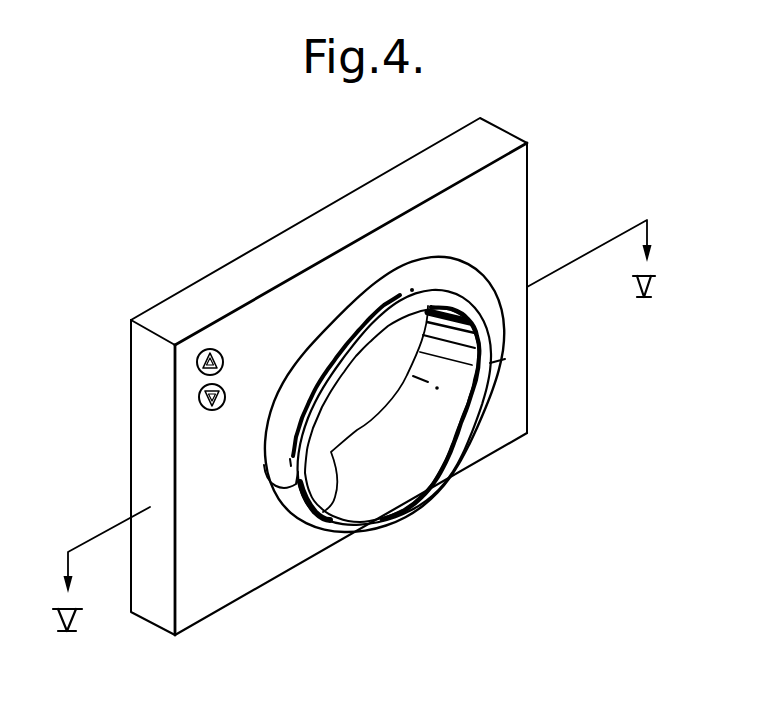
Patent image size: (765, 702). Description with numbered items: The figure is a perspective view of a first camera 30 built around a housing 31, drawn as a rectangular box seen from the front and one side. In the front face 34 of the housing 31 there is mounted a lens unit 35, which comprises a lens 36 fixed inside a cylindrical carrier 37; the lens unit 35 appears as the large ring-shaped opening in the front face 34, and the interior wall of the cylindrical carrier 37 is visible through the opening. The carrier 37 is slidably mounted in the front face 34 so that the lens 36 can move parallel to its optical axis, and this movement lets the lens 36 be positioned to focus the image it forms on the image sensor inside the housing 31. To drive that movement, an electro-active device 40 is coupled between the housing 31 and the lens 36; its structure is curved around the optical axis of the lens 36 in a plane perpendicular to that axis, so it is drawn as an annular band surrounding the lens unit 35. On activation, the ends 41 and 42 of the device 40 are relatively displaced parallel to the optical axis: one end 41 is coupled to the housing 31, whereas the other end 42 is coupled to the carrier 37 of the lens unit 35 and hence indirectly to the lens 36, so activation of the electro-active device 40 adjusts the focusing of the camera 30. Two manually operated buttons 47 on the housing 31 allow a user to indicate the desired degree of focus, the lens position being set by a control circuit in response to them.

The first camera 30 is at (215, 255).
The housing 31 is at (148, 471).
The front face 34 is at (512, 212).
The lens unit 35 is at (410, 522).
The lens 36 is at (320, 522).
The cylindrical carrier 37 is at (485, 393).
The electro-active device 40 is at (389, 280).
The end of electro-active device 41 is at (268, 477).
The other end of electro-active device 42 is at (501, 348).
The manually operated buttons 47 is at (197, 362).